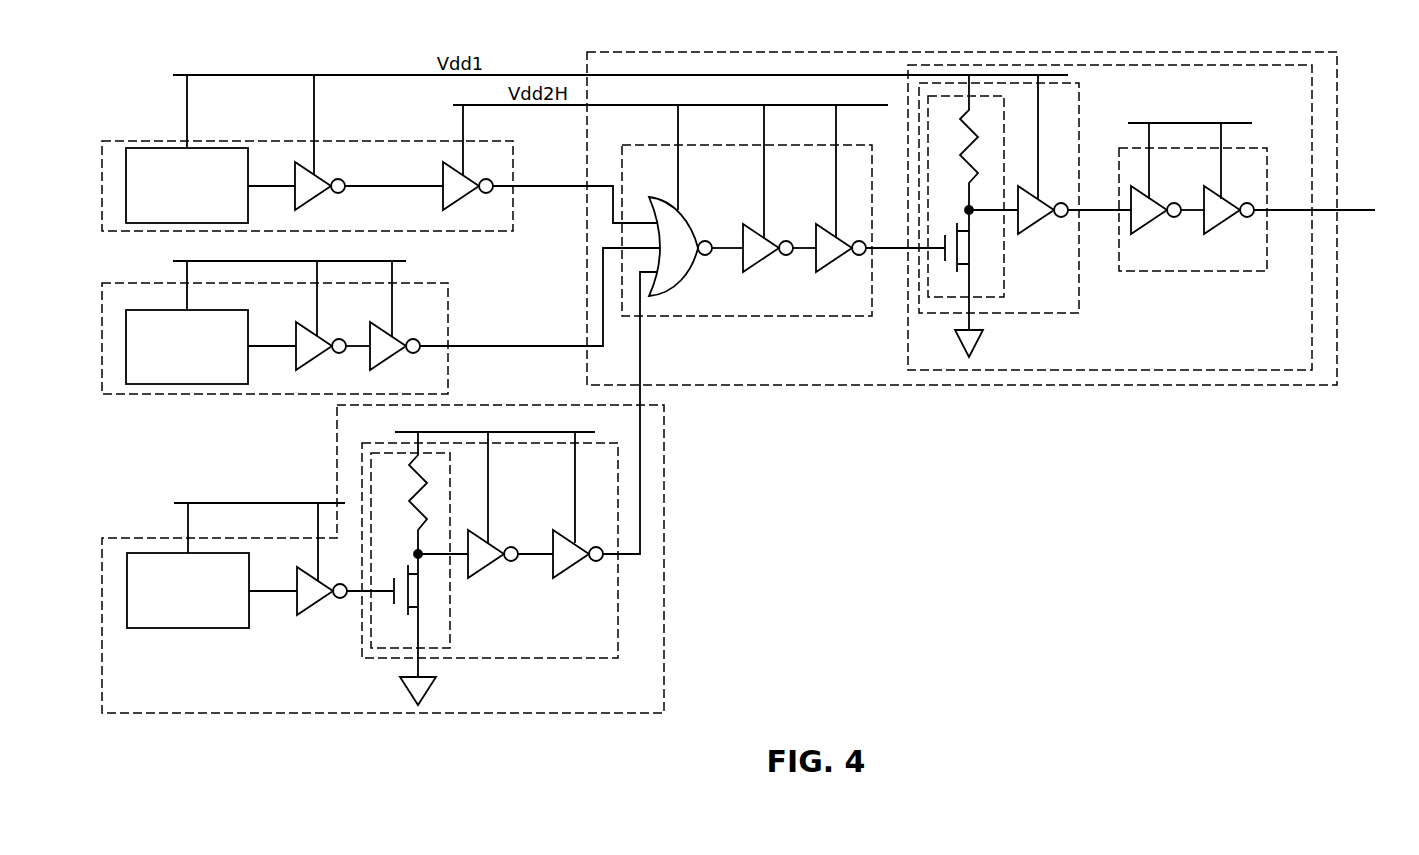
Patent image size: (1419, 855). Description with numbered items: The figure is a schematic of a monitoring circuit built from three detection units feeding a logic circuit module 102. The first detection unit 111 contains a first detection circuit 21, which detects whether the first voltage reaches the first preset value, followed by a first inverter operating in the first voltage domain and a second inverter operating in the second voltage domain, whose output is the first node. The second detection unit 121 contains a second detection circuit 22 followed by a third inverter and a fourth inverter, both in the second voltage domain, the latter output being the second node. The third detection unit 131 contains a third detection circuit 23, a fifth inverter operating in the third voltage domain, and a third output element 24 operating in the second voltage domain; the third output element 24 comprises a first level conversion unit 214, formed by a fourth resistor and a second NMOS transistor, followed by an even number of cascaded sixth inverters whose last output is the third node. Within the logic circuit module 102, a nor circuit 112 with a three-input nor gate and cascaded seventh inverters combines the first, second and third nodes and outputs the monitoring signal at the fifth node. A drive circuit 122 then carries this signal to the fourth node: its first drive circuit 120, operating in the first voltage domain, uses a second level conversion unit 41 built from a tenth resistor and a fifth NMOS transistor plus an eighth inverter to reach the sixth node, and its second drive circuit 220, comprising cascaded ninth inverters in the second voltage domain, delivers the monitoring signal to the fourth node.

The first detection circuit 21 is at (218, 147).
The second detection circuit 22 is at (145, 308).
The third detection circuit 23 is at (155, 552).
The first detection unit 111 is at (379, 153).
The second detection unit 121 is at (381, 316).
The third detection unit 131 is at (423, 492).
The nor circuit 112 is at (745, 316).
The logic circuit module 102 is at (1001, 244).
The drive circuit 122 is at (1162, 250).
The first drive circuit 120 is at (999, 218).
The second level conversion unit 41 is at (1004, 258).
The second drive circuit 220 is at (1170, 272).
The first level conversion unit 214 is at (450, 610).
The third output element 24 is at (509, 490).